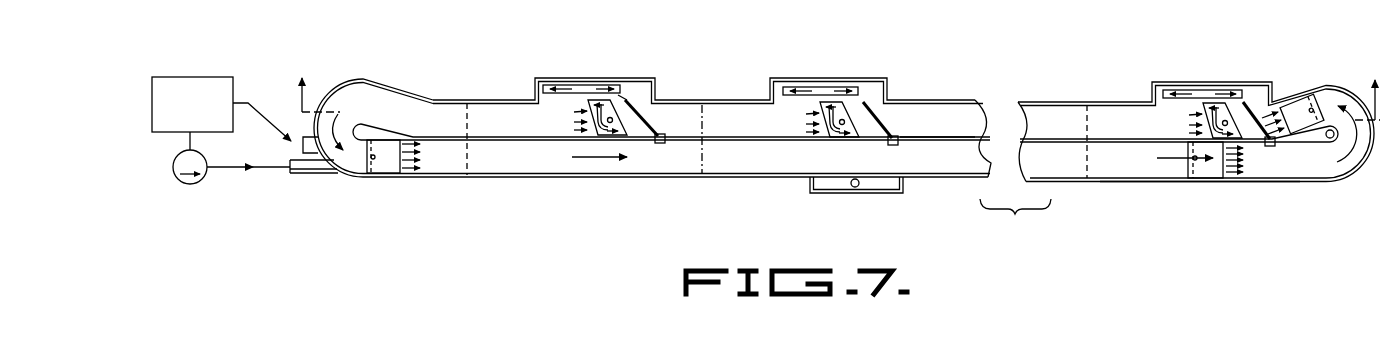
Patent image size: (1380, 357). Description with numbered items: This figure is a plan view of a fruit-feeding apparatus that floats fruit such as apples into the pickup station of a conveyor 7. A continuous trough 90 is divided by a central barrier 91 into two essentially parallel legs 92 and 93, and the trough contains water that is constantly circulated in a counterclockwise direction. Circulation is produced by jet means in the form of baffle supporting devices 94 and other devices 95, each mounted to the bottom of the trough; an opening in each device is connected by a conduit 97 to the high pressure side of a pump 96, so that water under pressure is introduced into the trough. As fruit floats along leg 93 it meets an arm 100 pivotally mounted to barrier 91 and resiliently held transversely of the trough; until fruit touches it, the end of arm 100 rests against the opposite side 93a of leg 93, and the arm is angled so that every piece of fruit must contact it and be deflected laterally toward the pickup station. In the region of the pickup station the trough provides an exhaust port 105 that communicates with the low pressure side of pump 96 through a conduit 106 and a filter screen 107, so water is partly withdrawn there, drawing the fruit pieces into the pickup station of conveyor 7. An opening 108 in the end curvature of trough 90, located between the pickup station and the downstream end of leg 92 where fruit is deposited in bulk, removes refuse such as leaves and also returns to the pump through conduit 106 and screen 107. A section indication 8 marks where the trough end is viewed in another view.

The conveyor 7 is at (582, 82).
The section line 8 is at (838, 85).
The continuous trough 90 is at (1256, 184).
The central barrier 91 is at (947, 139).
The leg 92 is at (691, 169).
The leg 93 is at (750, 131).
The opposite side of leg 93a is at (632, 103).
The baffle supporting device 94 is at (586, 114).
The jet device 95 is at (389, 165).
The pump 96 is at (190, 185).
The conduit 97 is at (314, 176).
The arm 100 is at (663, 133).
The exhaust port 105 is at (1173, 91).
The conduit 106 is at (304, 139).
The filter screen 107 is at (200, 77).
The opening 108 is at (1318, 137).